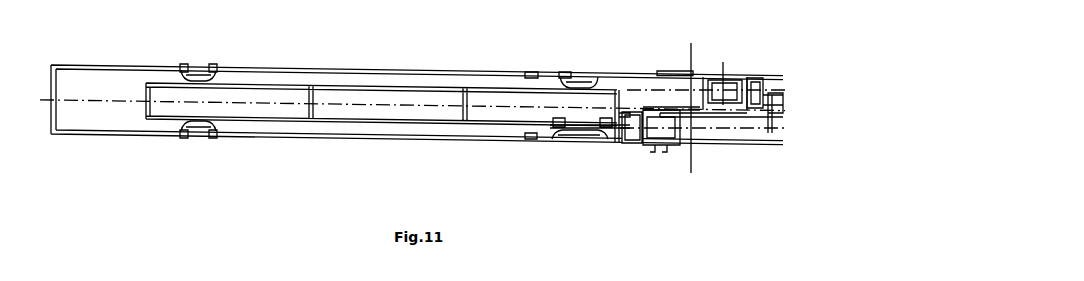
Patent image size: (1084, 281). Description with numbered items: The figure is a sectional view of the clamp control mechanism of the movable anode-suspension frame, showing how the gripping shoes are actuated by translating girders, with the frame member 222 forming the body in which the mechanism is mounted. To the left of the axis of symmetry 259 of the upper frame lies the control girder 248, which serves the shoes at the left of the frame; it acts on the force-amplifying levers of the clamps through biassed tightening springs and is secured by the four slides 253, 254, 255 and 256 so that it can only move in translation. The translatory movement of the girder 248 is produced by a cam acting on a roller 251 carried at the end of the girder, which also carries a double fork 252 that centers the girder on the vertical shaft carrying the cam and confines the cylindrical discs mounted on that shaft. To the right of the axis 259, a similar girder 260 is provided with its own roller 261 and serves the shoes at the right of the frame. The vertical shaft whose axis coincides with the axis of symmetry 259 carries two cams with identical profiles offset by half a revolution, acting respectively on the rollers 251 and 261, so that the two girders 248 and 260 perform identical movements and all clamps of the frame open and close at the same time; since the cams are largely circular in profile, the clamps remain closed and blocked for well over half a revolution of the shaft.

The housing 222 is at (103, 118).
The control girder 248 is at (335, 128).
The roller 251 is at (652, 140).
The double fork 252 is at (694, 115).
The slide 253 is at (200, 72).
The slide 254 is at (200, 132).
The slide 255 is at (573, 77).
The slide 256 is at (575, 140).
The axis of symmetry 259 is at (686, 54).
The girder 260 is at (773, 117).
The roller 261 is at (727, 83).